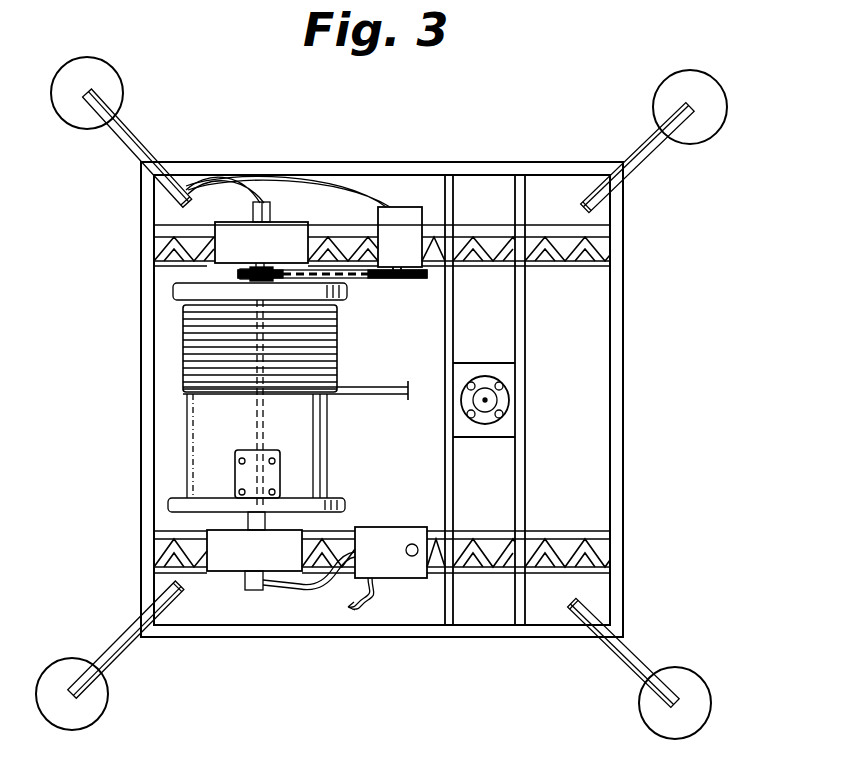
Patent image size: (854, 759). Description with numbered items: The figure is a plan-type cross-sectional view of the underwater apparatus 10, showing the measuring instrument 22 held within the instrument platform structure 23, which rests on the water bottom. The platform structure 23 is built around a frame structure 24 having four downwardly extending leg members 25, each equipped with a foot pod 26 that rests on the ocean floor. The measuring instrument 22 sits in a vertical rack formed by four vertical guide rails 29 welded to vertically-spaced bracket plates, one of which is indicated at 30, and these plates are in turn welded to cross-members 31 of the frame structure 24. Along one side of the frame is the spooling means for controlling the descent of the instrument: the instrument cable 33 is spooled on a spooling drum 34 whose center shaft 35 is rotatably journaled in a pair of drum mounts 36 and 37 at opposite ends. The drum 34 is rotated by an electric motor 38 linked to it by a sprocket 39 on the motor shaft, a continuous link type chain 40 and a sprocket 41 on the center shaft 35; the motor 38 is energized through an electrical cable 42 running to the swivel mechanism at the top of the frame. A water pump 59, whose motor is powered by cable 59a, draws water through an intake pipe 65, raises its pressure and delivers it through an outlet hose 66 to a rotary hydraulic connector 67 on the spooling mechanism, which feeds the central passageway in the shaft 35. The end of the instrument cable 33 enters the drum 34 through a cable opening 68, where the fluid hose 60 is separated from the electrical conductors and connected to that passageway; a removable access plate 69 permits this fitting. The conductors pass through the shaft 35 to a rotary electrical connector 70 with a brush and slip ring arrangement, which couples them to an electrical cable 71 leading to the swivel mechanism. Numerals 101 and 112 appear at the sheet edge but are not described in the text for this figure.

The underwater apparatus 10 is at (78, 342).
The measuring instrument 22 is at (490, 398).
The instrument platform structure 23 is at (637, 301).
The frame structure 24 is at (622, 350).
The leg members 25 is at (650, 158).
The foot pods 26 is at (708, 140).
The vertical guide rails 29 is at (505, 416).
The bracket plate 30 is at (476, 438).
The cross-members 31 is at (521, 494).
The instrument cable 33 is at (362, 390).
The spooling drum 34 is at (330, 428).
The center shaft 35 is at (250, 523).
The drum mount 36 is at (262, 560).
The drum mount 37 is at (270, 252).
The electric motor 38 is at (409, 244).
The sprocket 39 is at (416, 282).
The chain 40 is at (368, 283).
The sprocket 41 is at (242, 274).
The electrical cable 42 is at (363, 180).
The water pump 59 is at (388, 560).
The cable 59a is at (372, 600).
The fluid hose 60 is at (256, 420).
The intake pipe 65 is at (412, 544).
The outlet hose 66 is at (294, 585).
The rotary hydraulic connector 67 is at (256, 590).
The cable opening 68 is at (176, 296).
The access plate 69 is at (236, 470).
The rotary electrical connector 70 is at (272, 211).
The electrical cable 71 is at (222, 180).
The element of adjacent figure 101 is at (656, 758).
The element of adjacent figure 112 is at (706, 756).